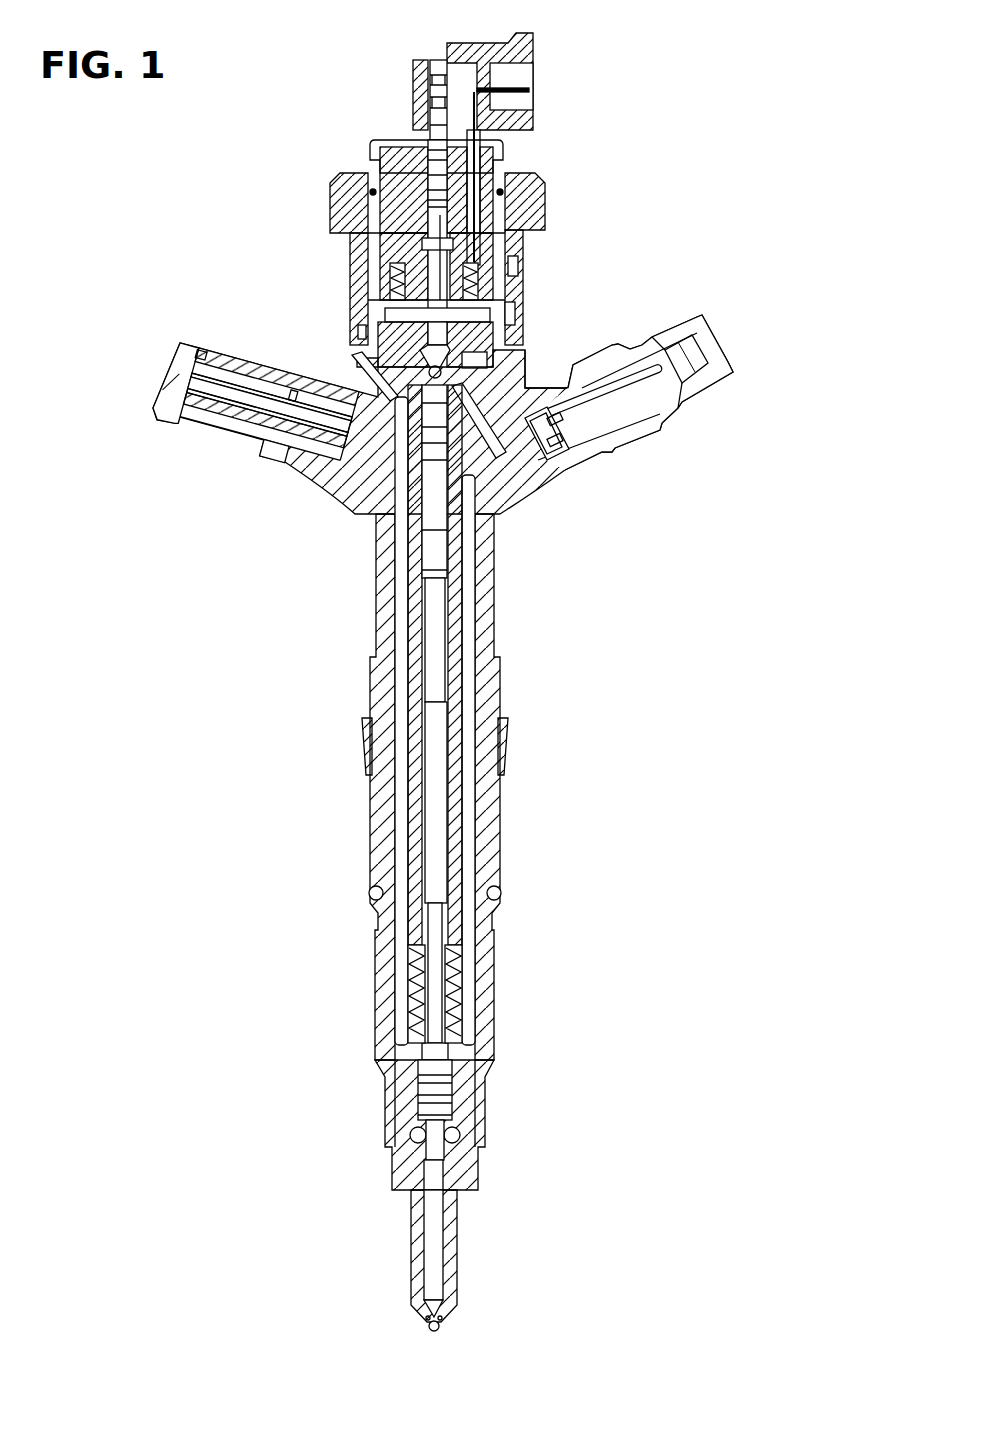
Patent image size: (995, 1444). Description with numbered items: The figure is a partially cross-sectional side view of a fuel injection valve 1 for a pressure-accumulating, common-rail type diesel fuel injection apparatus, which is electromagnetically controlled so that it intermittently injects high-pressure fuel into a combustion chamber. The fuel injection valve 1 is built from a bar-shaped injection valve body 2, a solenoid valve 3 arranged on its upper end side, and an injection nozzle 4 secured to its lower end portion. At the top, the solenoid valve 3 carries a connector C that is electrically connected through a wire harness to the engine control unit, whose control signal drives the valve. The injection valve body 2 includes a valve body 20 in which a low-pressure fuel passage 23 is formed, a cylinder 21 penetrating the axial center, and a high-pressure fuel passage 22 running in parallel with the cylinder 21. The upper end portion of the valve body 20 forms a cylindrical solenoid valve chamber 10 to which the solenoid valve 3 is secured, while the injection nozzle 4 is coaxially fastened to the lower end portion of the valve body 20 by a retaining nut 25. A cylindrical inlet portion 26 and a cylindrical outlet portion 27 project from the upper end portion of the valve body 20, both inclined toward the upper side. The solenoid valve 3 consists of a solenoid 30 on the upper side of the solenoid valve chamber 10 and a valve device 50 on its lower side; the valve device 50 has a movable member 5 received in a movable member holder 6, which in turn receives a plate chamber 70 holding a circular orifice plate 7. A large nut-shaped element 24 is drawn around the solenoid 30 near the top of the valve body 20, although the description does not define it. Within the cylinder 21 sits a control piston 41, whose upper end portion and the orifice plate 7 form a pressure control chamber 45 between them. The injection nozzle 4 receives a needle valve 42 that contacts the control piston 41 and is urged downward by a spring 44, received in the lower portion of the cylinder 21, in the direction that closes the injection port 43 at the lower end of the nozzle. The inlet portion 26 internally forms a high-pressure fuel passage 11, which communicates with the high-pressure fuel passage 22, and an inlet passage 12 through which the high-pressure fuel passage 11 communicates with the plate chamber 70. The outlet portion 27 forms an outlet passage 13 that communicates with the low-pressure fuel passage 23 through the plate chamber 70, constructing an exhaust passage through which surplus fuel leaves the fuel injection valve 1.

The fuel injection valve 1 is at (606, 198).
The injection valve body 2 is at (533, 637).
The solenoid valve 3 is at (538, 158).
The injection nozzle 4 is at (497, 1128).
The movable member 5 is at (493, 312).
The movable member holder 6 is at (497, 334).
The orifice plate 7 is at (467, 367).
The solenoid valve chamber 10 is at (513, 267).
The high-pressure fuel passage 11 is at (481, 485).
The inlet passage 12 is at (488, 466).
The outlet passage 13 is at (400, 397).
The valve body 20 is at (498, 796).
The cylinder 21 is at (455, 826).
The high-pressure fuel passage 22 is at (470, 855).
The low-pressure fuel passage 23 is at (398, 812).
The retaining nut 24 is at (337, 212).
The retaining nut 25 is at (387, 1152).
The inlet portion 26 is at (645, 432).
The outlet portion 27 is at (280, 466).
The solenoid 30 is at (372, 268).
The control piston 41 is at (432, 665).
The needle valve 42 is at (430, 1228).
The injection port 43 is at (428, 1323).
The spring 44 is at (420, 1020).
The pressure control chamber 45 is at (427, 366).
The valve device 50 is at (372, 335).
The plate chamber 70 is at (521, 372).
The connector C is at (507, 84).